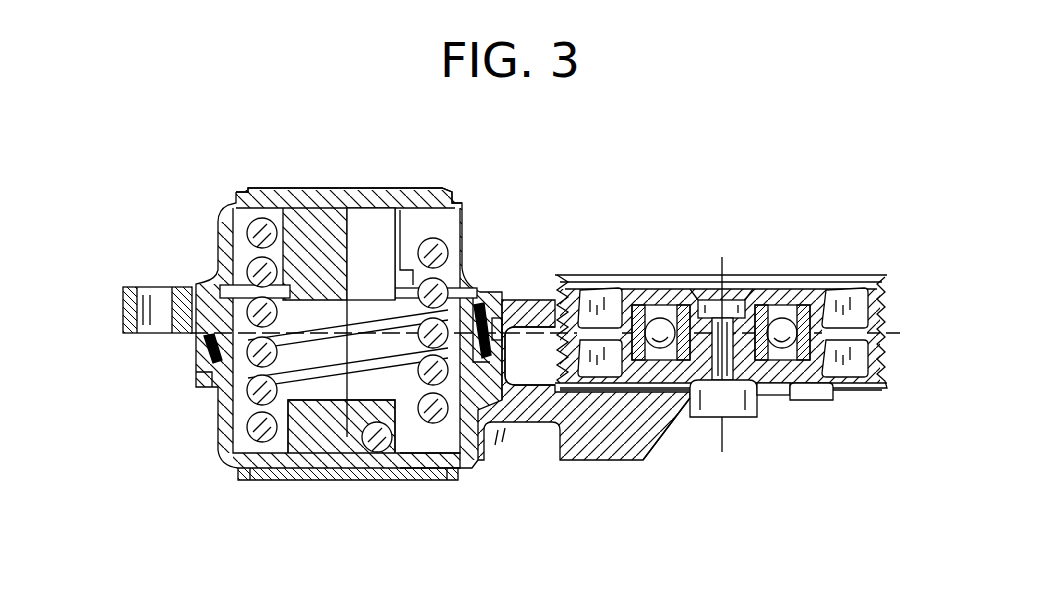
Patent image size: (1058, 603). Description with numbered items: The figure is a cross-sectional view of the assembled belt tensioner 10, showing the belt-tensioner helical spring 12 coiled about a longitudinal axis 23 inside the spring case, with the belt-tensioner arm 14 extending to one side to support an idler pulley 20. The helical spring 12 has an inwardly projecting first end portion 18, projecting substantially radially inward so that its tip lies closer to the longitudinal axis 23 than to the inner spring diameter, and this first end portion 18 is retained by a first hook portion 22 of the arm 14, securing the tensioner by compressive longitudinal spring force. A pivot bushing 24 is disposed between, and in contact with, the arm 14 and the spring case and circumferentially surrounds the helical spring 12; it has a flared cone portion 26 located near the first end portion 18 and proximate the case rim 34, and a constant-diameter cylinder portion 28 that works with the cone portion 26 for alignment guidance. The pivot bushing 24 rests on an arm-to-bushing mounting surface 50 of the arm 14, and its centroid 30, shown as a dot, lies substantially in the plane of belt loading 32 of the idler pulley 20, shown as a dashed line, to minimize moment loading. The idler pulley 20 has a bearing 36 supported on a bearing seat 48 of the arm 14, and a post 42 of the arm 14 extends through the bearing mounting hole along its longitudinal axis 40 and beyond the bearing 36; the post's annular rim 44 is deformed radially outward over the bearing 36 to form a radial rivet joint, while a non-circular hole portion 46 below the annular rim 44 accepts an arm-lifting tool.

The belt tensioner 10 is at (552, 157).
The belt-tensioner helical spring 12 is at (218, 395).
The belt-tensioner arm 14 is at (590, 466).
The first end portion 18 is at (372, 455).
The idler pulley 20 is at (866, 277).
The first hook portion 22 is at (412, 450).
The longitudinal axis 23 is at (343, 365).
The pivot bushing 24 is at (210, 323).
The cone portion 26 is at (497, 330).
The cylinder portion 28 is at (490, 293).
The centroid 30 is at (346, 331).
The plane of belt loading 32 is at (523, 338).
The case rim 34 is at (196, 383).
The bearing 36 is at (775, 277).
The longitudinal axis 40 is at (728, 400).
The post 42 is at (812, 400).
The annular rim 44 is at (748, 277).
The non-circular hole portion 46 is at (762, 402).
The bearing seat 48 is at (668, 375).
The arm-to-bushing mounting surface 50 is at (193, 358).